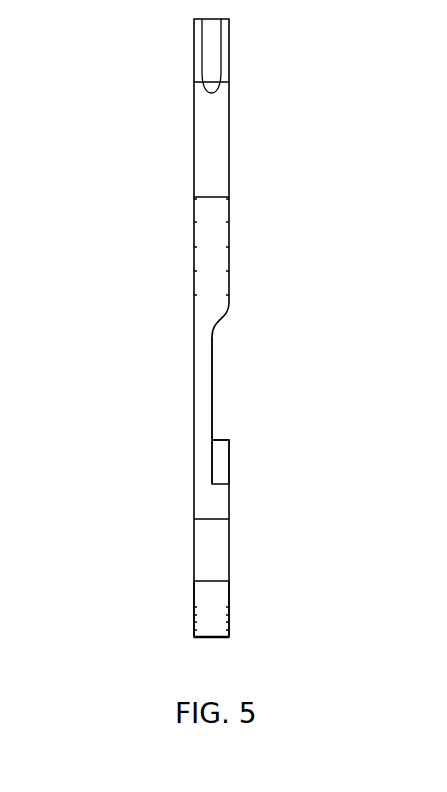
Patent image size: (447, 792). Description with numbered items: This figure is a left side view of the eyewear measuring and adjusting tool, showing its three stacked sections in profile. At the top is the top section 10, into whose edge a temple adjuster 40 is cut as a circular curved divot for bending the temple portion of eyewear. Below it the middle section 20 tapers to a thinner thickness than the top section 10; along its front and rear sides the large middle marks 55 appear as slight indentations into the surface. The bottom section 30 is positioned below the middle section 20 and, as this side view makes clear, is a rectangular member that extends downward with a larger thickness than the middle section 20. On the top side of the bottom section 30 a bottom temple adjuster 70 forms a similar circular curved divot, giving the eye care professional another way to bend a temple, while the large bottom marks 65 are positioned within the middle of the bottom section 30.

The top section 10 is at (217, 130).
The middle section 20 is at (193, 337).
The bottom section 30 is at (223, 537).
The temple adjusters 40 is at (194, 36).
The large middle marks 55 is at (238, 222).
The large bottom marks 65 is at (240, 602).
The bottom temple adjusters 70 is at (208, 454).